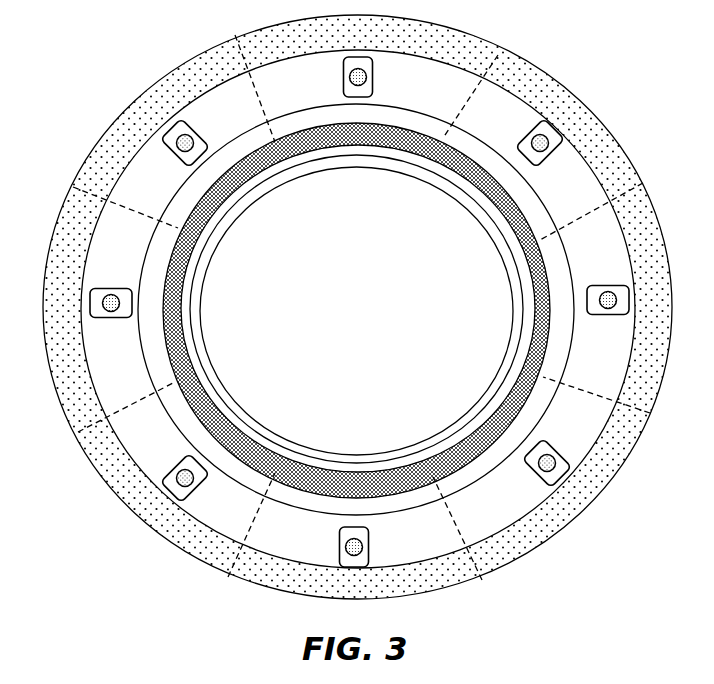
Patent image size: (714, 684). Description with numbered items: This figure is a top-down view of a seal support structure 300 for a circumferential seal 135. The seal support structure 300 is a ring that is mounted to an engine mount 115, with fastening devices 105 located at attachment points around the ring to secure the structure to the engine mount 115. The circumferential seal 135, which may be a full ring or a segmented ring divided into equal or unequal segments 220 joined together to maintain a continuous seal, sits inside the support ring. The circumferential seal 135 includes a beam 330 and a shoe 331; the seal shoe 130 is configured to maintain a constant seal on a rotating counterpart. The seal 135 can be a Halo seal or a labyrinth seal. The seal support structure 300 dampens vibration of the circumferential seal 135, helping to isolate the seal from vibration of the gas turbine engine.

The seal support structure 300 is at (80, 54).
The fastening device 105 is at (366, 78).
The engine mount 115 is at (598, 488).
The segments 220 is at (643, 184).
The seal shoe 130 is at (356, 309).
The circumferential seal 135 is at (302, 121).
The beam 330 is at (217, 222).
The shoe 331 is at (263, 192).